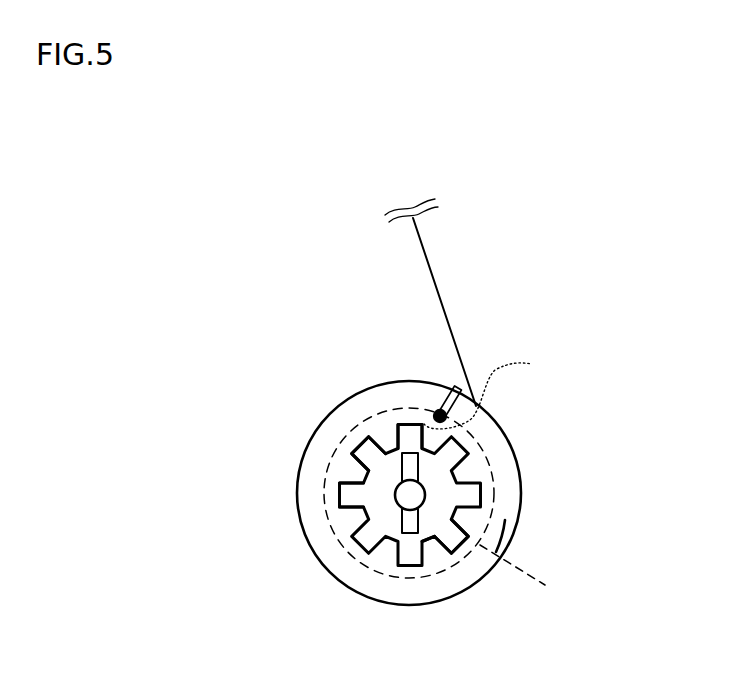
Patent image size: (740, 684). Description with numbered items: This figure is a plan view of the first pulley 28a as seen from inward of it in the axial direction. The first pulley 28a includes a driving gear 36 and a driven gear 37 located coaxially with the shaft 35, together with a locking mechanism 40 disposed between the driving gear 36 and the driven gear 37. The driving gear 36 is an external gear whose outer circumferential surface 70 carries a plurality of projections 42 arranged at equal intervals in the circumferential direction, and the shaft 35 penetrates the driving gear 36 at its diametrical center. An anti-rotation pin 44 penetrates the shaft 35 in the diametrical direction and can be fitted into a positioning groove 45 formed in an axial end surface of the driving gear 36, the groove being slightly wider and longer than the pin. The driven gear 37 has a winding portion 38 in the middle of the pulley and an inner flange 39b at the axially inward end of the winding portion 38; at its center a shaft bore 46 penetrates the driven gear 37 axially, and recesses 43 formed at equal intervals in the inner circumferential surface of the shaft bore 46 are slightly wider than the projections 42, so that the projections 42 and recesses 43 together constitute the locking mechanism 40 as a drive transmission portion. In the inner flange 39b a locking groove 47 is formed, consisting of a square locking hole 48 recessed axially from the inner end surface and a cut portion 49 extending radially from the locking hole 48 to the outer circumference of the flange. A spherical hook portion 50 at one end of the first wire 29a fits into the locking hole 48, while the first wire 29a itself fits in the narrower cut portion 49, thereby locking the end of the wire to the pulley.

The first pulley 28a is at (490, 485).
The first wire 29a is at (443, 312).
The shaft 35 is at (410, 495).
The driving gear 36 is at (507, 468).
The driven gear 37 is at (503, 425).
The winding portion 38 is at (533, 577).
The inner flange 39b is at (507, 512).
The locking mechanism 40 is at (320, 476).
The projections 42 is at (352, 452).
The recesses 43 is at (338, 476).
The anti-rotation pin 44 is at (436, 545).
The positioning groove 45 is at (400, 532).
The shaft bore 46 is at (393, 427).
The locking groove 47 is at (431, 336).
The locking hole 48 is at (424, 422).
The cut portion 49 is at (450, 378).
The hook portion 50 is at (446, 413).
The outer circumferential surface 70 is at (464, 517).